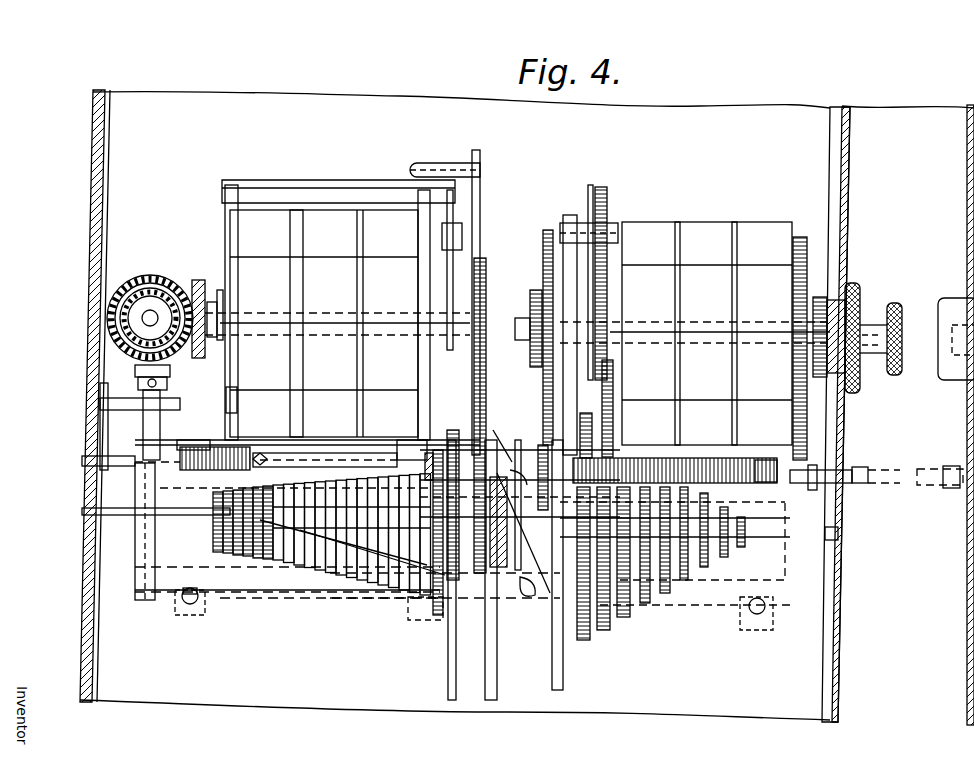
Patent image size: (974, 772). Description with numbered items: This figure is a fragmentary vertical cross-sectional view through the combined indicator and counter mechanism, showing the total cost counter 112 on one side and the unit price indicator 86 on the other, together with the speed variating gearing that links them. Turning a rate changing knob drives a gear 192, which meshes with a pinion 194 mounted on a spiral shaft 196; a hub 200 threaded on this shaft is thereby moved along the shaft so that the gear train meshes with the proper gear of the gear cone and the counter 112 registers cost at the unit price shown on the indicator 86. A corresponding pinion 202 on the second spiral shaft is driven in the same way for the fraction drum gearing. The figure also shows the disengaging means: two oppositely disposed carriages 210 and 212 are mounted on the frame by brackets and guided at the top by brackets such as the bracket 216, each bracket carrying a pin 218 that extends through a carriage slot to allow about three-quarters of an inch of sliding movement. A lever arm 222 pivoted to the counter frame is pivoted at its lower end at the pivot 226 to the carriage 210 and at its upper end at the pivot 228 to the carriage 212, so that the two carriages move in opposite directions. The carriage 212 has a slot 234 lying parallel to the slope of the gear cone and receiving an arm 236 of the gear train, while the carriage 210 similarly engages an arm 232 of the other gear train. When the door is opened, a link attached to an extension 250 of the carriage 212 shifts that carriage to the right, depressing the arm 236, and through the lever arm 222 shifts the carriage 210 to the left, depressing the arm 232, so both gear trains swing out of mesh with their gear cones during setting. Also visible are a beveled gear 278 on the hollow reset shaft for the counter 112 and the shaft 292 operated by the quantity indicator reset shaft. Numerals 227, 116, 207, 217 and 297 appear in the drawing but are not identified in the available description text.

The total cost counter 112 is at (332, 205).
The unit price indicator 86 is at (715, 222).
The gear 192 is at (543, 252).
The pivot 228 is at (498, 440).
The shaft 227 is at (523, 440).
The pinion 194 is at (605, 458).
The worm 116 is at (672, 465).
The hub 200 is at (805, 422).
The beveled gear 278 is at (858, 467).
The extension of the carriage 250 is at (862, 482).
The pinion 202 is at (812, 500).
The shaft 207 is at (737, 483).
The slot 234 is at (720, 510).
The carriage 212 is at (686, 605).
The arm 236 is at (612, 525).
The pivot 226 is at (520, 585).
The lever arm 222 is at (510, 578).
The arm 232 is at (427, 558).
The carriage 210 is at (256, 595).
The bearing 217 is at (194, 615).
The pin 218 is at (178, 604).
The spiral shaft 196 is at (217, 473).
The bracket 216 is at (182, 445).
The shaft 292 is at (100, 404).
The dial 297 is at (106, 334).